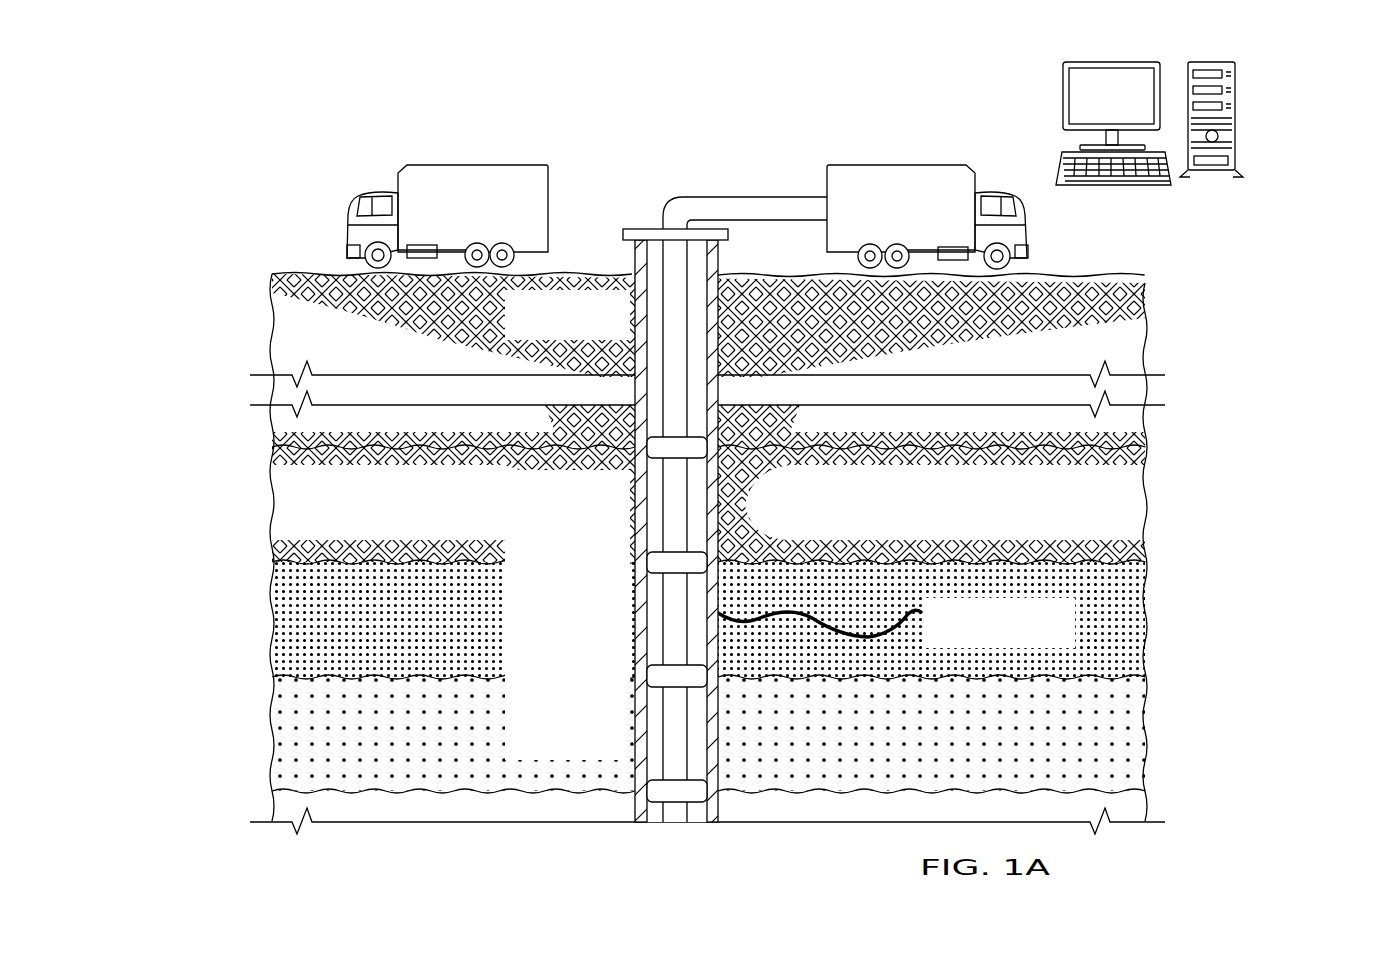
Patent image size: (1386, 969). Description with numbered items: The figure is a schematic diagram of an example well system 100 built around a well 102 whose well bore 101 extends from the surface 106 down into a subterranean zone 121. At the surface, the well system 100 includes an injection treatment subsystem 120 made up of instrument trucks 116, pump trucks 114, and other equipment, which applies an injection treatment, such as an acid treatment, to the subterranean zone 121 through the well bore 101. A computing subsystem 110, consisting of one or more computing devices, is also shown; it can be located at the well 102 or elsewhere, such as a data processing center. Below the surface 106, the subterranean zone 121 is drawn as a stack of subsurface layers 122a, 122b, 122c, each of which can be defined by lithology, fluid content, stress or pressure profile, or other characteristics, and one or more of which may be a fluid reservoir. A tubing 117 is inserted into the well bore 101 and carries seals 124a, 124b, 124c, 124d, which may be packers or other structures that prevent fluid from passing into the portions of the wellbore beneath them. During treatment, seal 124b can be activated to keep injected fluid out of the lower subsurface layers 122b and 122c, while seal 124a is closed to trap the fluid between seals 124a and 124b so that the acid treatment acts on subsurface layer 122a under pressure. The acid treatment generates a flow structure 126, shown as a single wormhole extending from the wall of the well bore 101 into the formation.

The well system 100 is at (257, 182).
The well bore 101 is at (632, 332).
The well 102 is at (622, 505).
The surface 106 is at (1098, 277).
The computing subsystem 110 is at (1240, 118).
The pump trucks 114 is at (896, 165).
The instrument trucks 116 is at (476, 165).
The tubing 117 is at (775, 197).
The injection treatment subsystem 120 is at (690, 150).
The subterranean zone 121 is at (256, 508).
The subsurface layer 122a is at (1145, 503).
The subsurface layer 122b is at (1145, 623).
The subsurface layer 122c is at (1145, 737).
The seal 124a is at (677, 463).
The seal 124b is at (677, 577).
The seal 124c is at (677, 690).
The seal 124d is at (676, 805).
The flow structure 126 is at (913, 598).